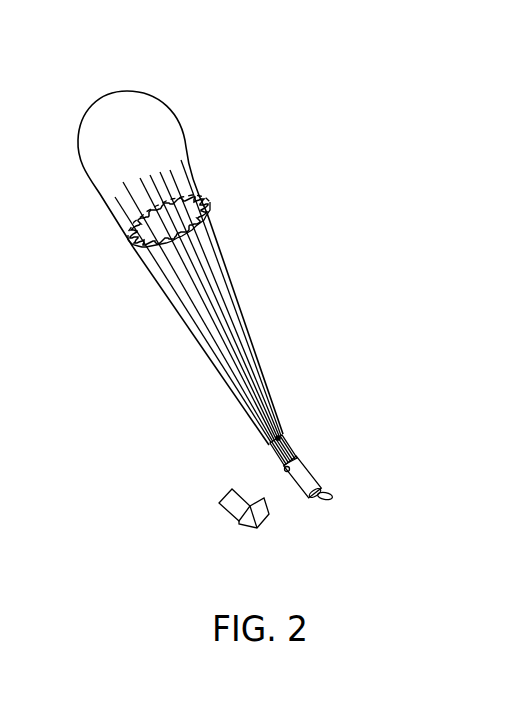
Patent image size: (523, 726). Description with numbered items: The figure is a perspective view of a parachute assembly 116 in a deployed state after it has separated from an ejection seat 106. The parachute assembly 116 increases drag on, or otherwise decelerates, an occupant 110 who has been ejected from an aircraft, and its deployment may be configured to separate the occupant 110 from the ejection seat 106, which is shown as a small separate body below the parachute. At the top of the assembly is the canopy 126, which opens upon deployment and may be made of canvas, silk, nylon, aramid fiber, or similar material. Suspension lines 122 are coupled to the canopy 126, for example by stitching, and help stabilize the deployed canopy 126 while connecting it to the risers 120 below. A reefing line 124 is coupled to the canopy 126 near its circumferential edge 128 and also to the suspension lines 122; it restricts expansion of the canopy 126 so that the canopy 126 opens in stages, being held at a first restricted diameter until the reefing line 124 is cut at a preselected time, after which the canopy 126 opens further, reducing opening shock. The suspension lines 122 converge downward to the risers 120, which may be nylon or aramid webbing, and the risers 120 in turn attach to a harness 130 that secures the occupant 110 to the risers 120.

The parachute assembly 116 is at (97, 76).
The canopy 126 is at (141, 136).
The circumferential edge 128 is at (193, 197).
The reefing line 124 is at (137, 242).
The suspension lines 122 is at (226, 261).
The risers 120 is at (281, 406).
The harness 130 is at (293, 444).
The occupant 110 is at (259, 447).
The ejection seat 106 is at (226, 507).